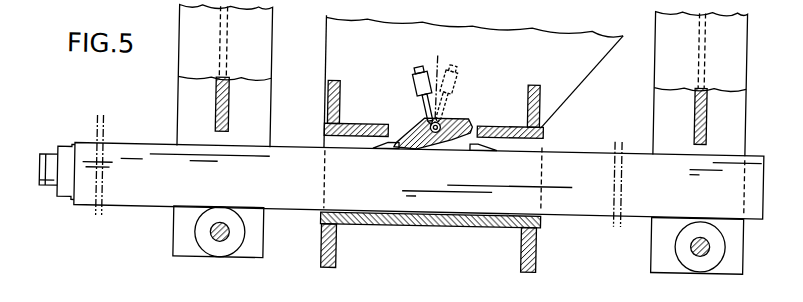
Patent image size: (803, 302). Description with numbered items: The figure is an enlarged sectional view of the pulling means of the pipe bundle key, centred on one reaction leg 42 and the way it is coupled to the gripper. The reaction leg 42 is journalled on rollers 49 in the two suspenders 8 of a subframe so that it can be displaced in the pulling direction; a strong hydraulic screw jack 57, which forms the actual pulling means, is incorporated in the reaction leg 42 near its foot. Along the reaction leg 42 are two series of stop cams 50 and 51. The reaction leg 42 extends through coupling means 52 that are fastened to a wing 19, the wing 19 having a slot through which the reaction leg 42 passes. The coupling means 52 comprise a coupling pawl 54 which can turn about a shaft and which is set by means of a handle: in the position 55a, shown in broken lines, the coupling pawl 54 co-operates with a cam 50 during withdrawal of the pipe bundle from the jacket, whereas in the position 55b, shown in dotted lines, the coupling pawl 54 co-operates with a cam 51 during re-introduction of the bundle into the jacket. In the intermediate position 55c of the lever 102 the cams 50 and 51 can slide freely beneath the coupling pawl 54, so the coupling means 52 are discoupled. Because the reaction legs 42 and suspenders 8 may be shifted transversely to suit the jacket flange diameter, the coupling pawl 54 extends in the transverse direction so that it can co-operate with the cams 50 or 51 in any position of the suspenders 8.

The suspender 8 is at (197, 50).
The wing 19 is at (312, 227).
The reaction leg 42 is at (139, 209).
The roller 49 is at (199, 226).
The stop cam 50 is at (390, 143).
The stop cam 51 is at (482, 145).
The coupling means 52 is at (524, 50).
The coupling pawl 54 is at (465, 111).
The handle position 55a is at (417, 60).
The handle position 55b is at (457, 58).
The intermediate position 55c is at (435, 49).
The hydraulic screw jack 57 is at (47, 188).
The lever 102 is at (412, 74).